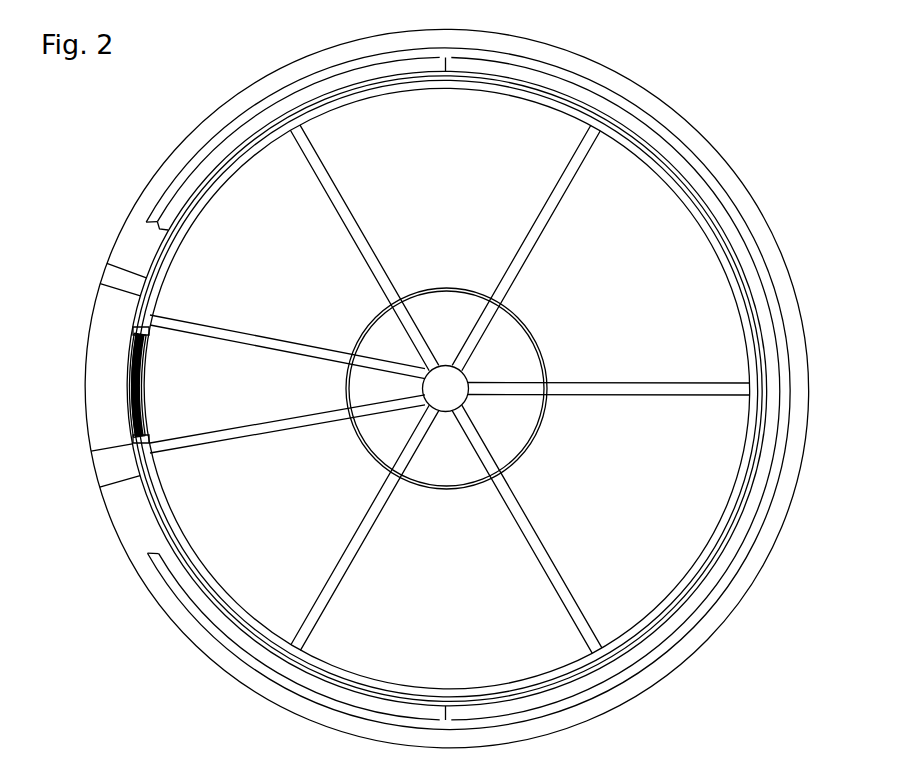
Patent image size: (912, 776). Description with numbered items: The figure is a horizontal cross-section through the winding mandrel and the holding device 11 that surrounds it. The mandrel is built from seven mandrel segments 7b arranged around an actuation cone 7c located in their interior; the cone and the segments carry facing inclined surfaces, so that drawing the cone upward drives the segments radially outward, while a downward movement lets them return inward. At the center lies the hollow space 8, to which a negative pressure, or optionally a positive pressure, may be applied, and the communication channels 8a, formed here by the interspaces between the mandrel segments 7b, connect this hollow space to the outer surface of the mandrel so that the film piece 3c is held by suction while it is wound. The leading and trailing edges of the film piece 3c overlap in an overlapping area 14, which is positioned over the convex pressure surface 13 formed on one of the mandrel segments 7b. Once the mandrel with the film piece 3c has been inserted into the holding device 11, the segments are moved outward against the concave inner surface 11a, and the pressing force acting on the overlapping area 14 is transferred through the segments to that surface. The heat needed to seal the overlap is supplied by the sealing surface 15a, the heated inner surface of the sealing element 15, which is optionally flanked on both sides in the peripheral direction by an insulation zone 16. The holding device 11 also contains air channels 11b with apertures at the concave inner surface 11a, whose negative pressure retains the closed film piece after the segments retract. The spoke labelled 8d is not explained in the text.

The film piece 3c is at (161, 239).
The mandrel segments 7b is at (463, 185).
The actuation cone 7c is at (549, 352).
The hollow space 8 is at (461, 424).
The communication channels 8a is at (556, 200).
The spoke 8d is at (694, 396).
The holding device 11 is at (135, 578).
The concave inner surface 11a is at (160, 512).
The air channels 11b is at (222, 135).
The convex pressure surface 13 is at (140, 442).
The overlapping area 14 is at (123, 379).
The sealing element 15 is at (87, 329).
The sealing surface 15a is at (141, 330).
The insulation zone 16 is at (100, 267).